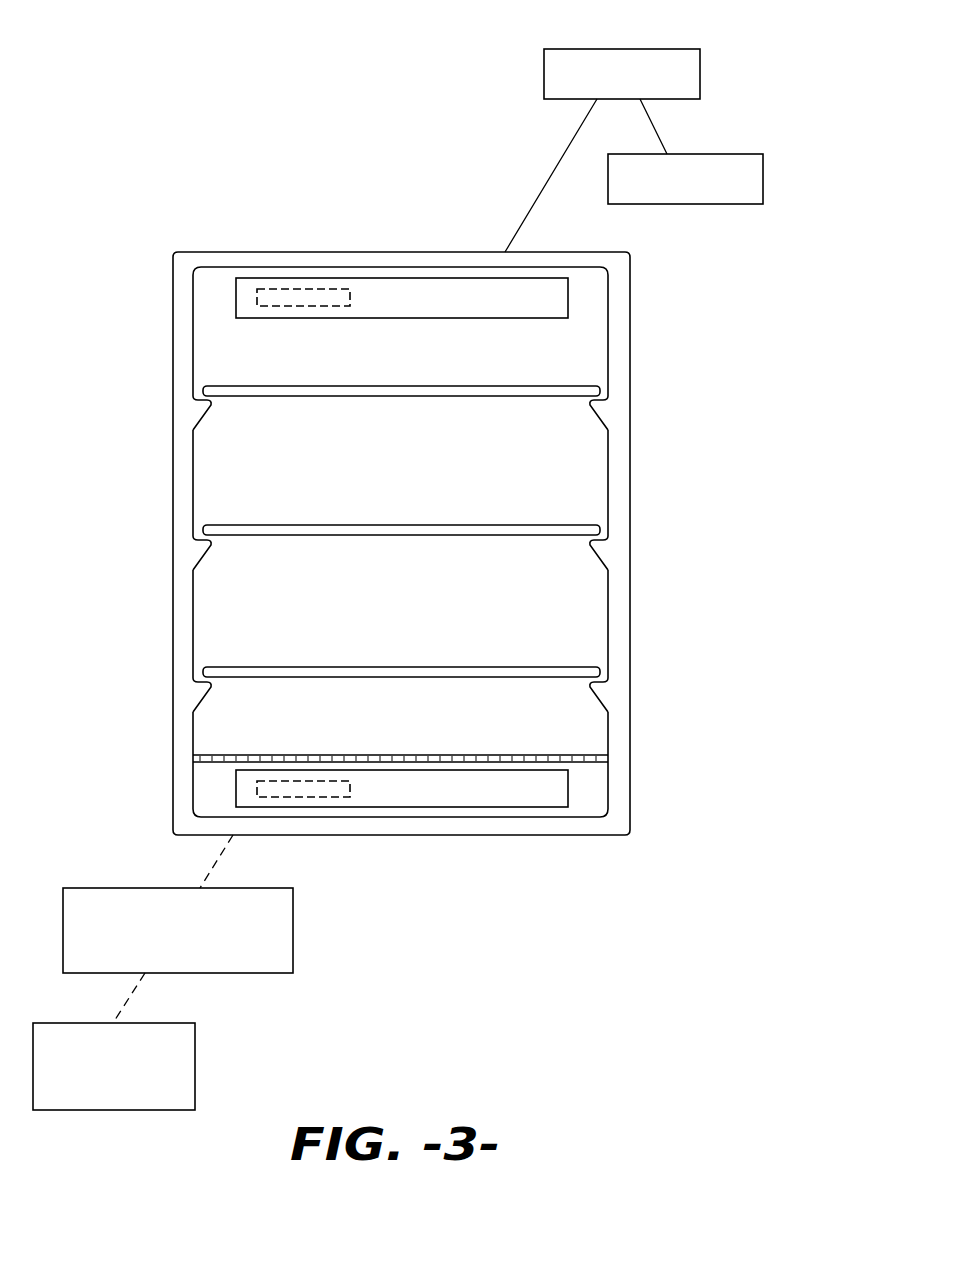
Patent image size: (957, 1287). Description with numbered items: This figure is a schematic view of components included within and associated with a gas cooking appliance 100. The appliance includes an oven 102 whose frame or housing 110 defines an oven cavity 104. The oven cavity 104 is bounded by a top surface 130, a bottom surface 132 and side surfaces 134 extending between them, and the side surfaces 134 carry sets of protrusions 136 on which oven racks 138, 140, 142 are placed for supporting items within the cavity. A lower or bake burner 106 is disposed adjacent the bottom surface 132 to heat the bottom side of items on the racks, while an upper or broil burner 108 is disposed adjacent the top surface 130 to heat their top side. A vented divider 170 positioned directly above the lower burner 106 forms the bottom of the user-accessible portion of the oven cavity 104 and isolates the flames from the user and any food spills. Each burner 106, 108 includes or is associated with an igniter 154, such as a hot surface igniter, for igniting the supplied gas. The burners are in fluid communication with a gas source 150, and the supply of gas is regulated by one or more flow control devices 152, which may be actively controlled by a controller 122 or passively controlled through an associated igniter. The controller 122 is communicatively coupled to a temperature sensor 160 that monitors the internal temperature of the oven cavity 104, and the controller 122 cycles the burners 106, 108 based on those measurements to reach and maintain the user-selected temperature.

The gas cooking appliance 100 is at (238, 128).
The oven 102 is at (632, 449).
The oven cavity 104 is at (233, 599).
The lower burner 106 is at (448, 808).
The upper burner 108 is at (430, 278).
The housing 110 is at (632, 605).
The controller 122 is at (637, 49).
The top surface 130 is at (217, 268).
The bottom surface 132 is at (580, 815).
The side surfaces 134 is at (194, 462).
The protrusions 136 is at (203, 688).
The oven rack 138 is at (387, 397).
The oven rack 140 is at (383, 535).
The oven rack 142 is at (392, 677).
The gas source 150 is at (195, 1075).
The flow control device 152 is at (293, 938).
The igniter 154 is at (300, 289).
The temperature sensor 160 is at (702, 154).
The vented divider 170 is at (230, 762).